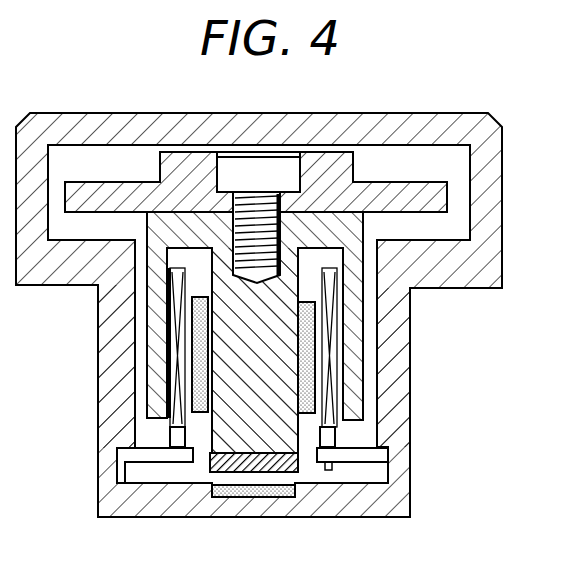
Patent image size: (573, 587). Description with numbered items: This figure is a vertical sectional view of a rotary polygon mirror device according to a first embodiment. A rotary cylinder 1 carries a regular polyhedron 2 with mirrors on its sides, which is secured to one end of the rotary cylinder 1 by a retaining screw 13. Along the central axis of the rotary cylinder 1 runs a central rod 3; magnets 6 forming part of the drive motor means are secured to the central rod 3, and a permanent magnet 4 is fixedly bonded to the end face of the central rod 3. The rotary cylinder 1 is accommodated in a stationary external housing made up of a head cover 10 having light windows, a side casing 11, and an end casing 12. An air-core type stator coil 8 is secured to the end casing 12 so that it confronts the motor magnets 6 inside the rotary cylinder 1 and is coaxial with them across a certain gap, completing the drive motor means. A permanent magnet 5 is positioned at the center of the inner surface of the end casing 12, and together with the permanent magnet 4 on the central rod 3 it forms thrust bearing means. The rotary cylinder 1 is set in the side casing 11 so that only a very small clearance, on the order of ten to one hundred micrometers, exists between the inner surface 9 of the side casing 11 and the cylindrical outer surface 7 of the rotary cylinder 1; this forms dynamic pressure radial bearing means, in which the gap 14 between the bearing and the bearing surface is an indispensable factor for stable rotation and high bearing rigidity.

The rotary cylinder 1 is at (350, 227).
The regular polyhedron 2 is at (425, 182).
The central rod 3 is at (272, 283).
The permanent magnet 4 is at (212, 462).
The permanent magnet 5 is at (267, 490).
The magnets 6 is at (315, 320).
The outer surface 7 is at (147, 387).
The air-core type stator coil 8 is at (167, 311).
The inner surface 9 is at (130, 350).
The head cover 10 is at (425, 113).
The side casing 11 is at (412, 404).
The end casing 12 is at (412, 472).
The retaining screw 13 is at (258, 173).
The gap 14 is at (374, 366).